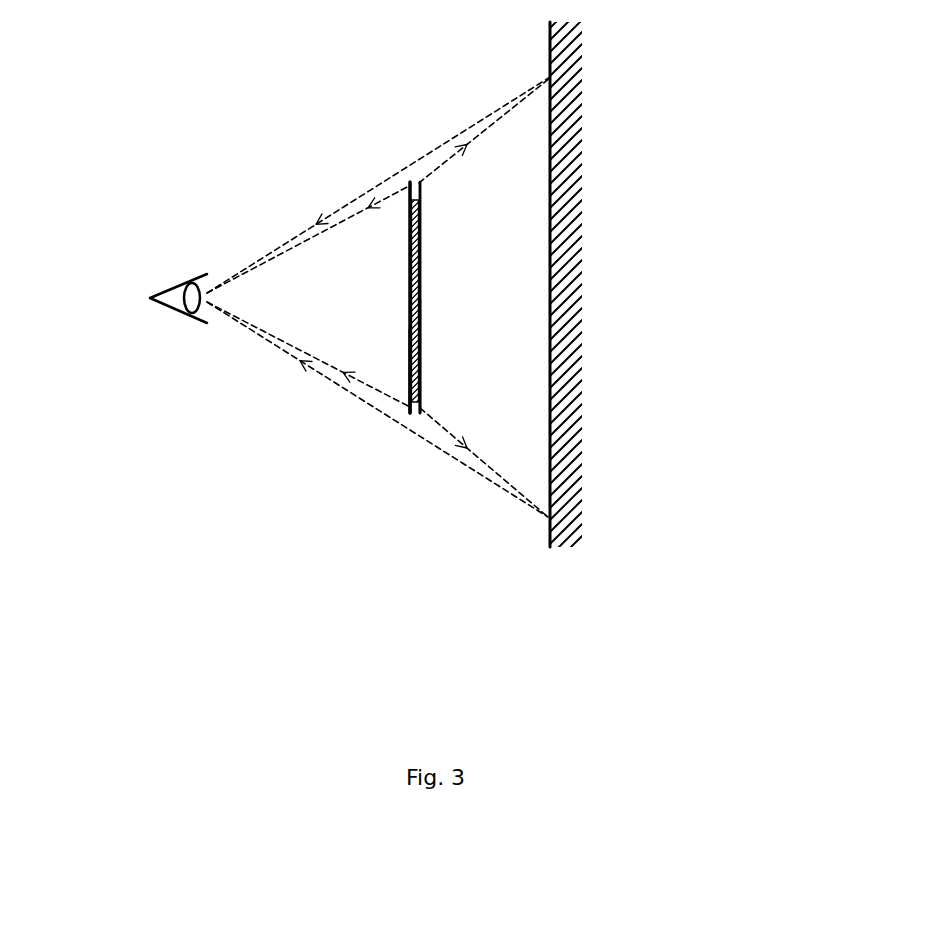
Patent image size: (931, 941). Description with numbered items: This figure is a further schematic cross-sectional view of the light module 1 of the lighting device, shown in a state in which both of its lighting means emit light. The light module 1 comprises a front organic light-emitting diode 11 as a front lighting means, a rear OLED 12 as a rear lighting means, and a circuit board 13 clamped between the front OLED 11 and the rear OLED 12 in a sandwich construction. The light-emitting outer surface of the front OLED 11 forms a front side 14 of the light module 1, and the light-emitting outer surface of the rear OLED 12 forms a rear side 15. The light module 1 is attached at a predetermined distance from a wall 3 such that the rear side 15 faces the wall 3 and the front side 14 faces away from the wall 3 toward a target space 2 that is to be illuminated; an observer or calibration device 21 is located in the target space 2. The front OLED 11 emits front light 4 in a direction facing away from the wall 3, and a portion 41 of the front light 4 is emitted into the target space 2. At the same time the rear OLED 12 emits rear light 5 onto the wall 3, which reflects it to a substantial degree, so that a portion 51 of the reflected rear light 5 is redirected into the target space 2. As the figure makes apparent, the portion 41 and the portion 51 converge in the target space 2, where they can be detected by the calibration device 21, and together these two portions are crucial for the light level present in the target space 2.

The light module 1 is at (417, 167).
The front organic light-emitting diode 11 is at (410, 172).
The rear organic light-emitting diode 12 is at (421, 170).
The circuit board 13 is at (420, 266).
The front side 14 is at (410, 352).
The rear side 15 is at (421, 328).
The target space 2 is at (188, 375).
The observer or calibration device 21 is at (176, 290).
The wall 3 is at (560, 125).
The front light 4 is at (263, 392).
The portion of the front light 41 is at (340, 216).
The rear light 5 is at (507, 522).
The portion of the reflected rear light 51 is at (293, 237).